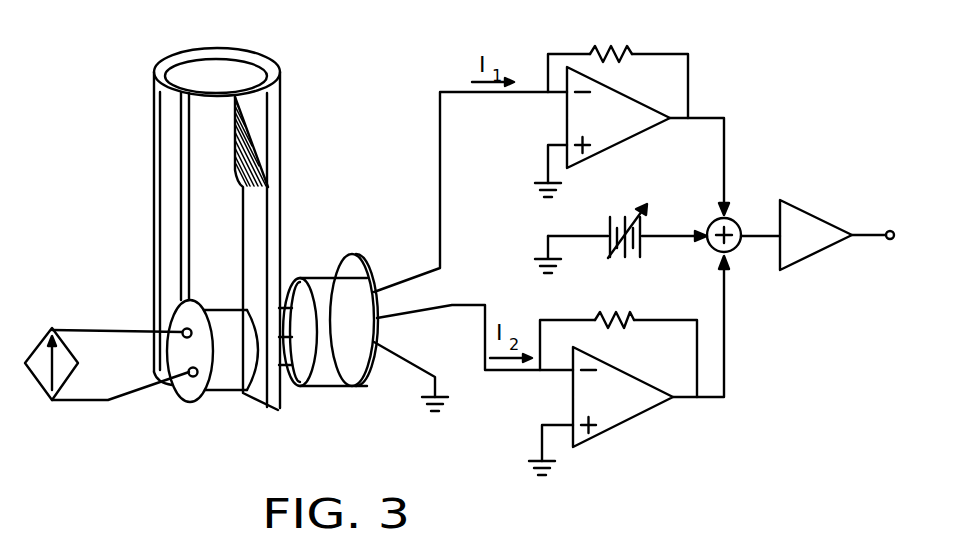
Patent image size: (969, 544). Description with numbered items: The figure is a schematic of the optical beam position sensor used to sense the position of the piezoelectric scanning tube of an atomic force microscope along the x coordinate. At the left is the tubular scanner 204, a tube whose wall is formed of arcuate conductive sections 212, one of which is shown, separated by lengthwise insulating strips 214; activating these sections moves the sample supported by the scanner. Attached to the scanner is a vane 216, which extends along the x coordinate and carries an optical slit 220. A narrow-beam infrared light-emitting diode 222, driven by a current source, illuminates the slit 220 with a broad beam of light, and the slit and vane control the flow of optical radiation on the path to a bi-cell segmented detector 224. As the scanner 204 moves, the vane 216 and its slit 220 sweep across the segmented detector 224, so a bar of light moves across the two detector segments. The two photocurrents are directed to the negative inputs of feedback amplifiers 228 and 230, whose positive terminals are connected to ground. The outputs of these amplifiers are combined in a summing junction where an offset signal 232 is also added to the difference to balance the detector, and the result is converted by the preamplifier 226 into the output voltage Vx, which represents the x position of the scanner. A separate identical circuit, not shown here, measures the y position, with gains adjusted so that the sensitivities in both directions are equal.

The tubular scanner 204 is at (168, 195).
The arcuate conductive section 212 is at (252, 108).
The insulating strips 214 is at (180, 125).
The vane 216 is at (275, 193).
The optical slit 220 is at (263, 293).
The light-emitting diode 222 is at (141, 377).
The detector 224 is at (428, 271).
The preamplifier 226 is at (817, 219).
The feedback amplifier 228 is at (570, 115).
The feedback amplifier 230 is at (629, 365).
The offset signal 232 is at (644, 225).